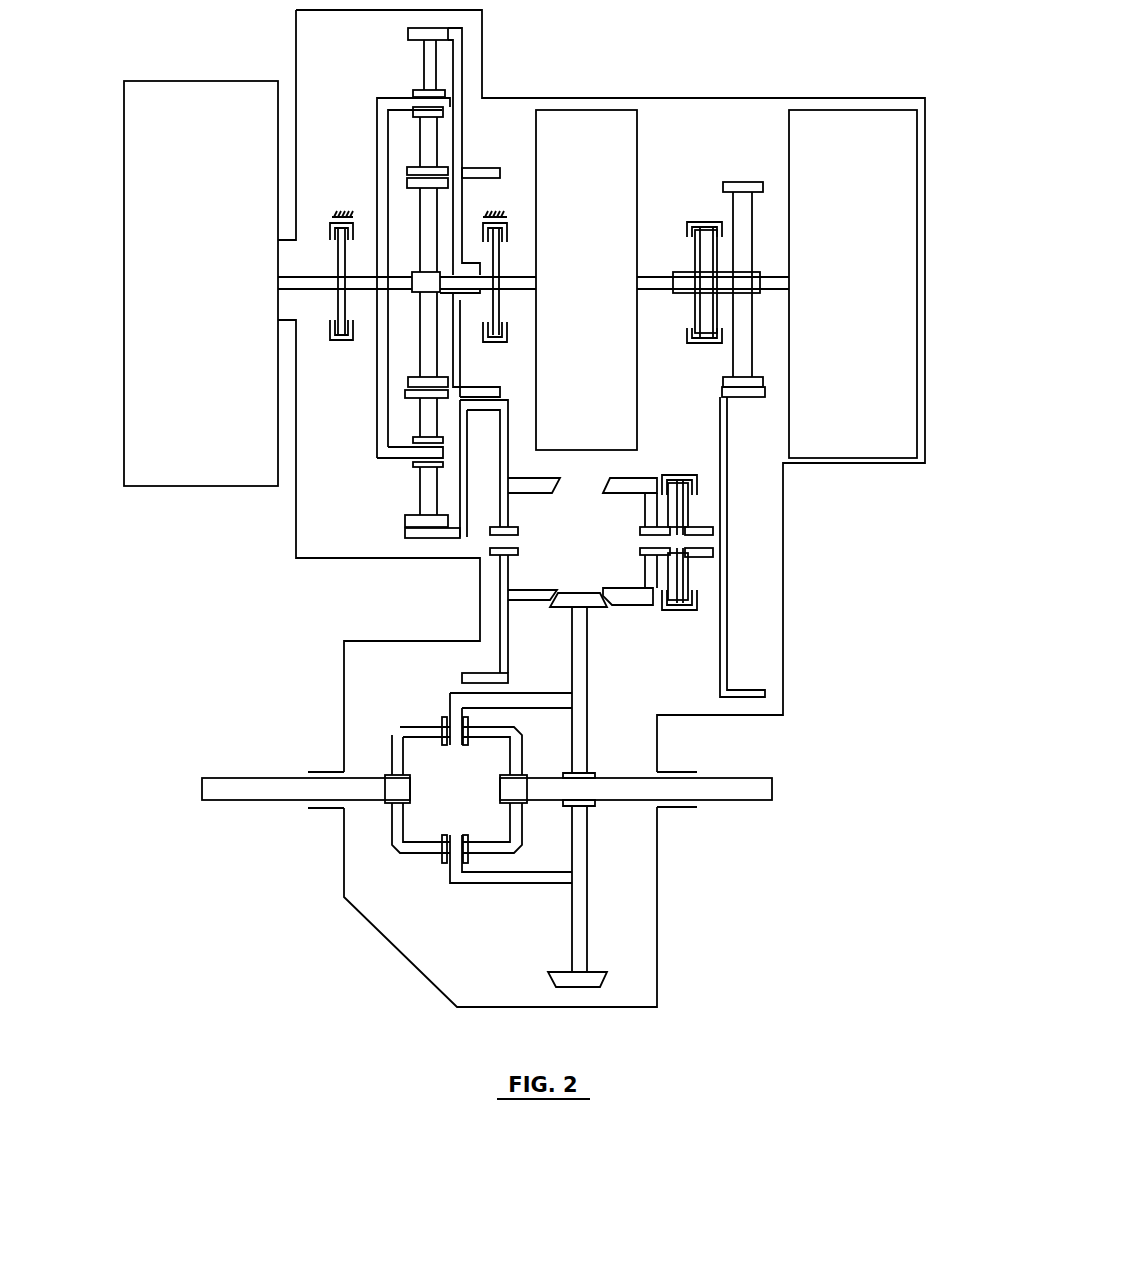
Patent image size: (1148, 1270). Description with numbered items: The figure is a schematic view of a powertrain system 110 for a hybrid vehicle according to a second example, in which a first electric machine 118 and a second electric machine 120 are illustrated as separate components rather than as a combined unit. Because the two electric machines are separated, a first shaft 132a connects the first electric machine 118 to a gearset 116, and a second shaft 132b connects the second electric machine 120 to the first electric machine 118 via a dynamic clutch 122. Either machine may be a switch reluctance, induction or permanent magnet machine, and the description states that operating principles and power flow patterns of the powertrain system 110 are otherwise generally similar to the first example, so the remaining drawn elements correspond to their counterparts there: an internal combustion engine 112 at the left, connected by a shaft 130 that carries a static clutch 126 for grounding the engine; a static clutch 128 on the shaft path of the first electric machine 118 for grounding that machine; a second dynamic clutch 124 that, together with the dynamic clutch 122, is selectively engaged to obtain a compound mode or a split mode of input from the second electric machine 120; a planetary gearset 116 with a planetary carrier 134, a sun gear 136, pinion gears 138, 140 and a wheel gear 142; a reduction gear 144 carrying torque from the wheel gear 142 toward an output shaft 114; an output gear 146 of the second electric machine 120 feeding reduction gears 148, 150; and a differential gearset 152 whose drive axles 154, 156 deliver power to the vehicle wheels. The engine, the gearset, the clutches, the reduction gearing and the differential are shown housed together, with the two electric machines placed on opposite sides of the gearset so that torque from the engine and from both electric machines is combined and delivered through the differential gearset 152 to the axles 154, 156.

The powertrain system 110 is at (243, 997).
The internal combustion engine 112 is at (238, 487).
The output shaft 114 is at (548, 970).
The gearset 116 is at (473, 133).
The first electric machine 118 is at (618, 120).
The second electric machine 120 is at (865, 122).
The dynamic clutch 122 is at (700, 215).
The clutch 124 is at (685, 470).
The brake 126 is at (333, 200).
The brake 128 is at (500, 205).
The input shaft 130 is at (312, 290).
The first shaft 132a is at (520, 290).
The second shaft 132b is at (652, 292).
The gear 134 is at (380, 127).
The sleeve shaft 136 is at (440, 205).
The gear 138 is at (408, 418).
The gear 140 is at (410, 68).
The gear 142 is at (405, 528).
The gear 144 is at (470, 668).
The gear 146 is at (747, 175).
The connecting member 148 is at (718, 397).
The gear 150 is at (627, 470).
The differential 152 is at (430, 698).
The axle shaft 154 is at (265, 795).
The axle shaft 156 is at (725, 800).